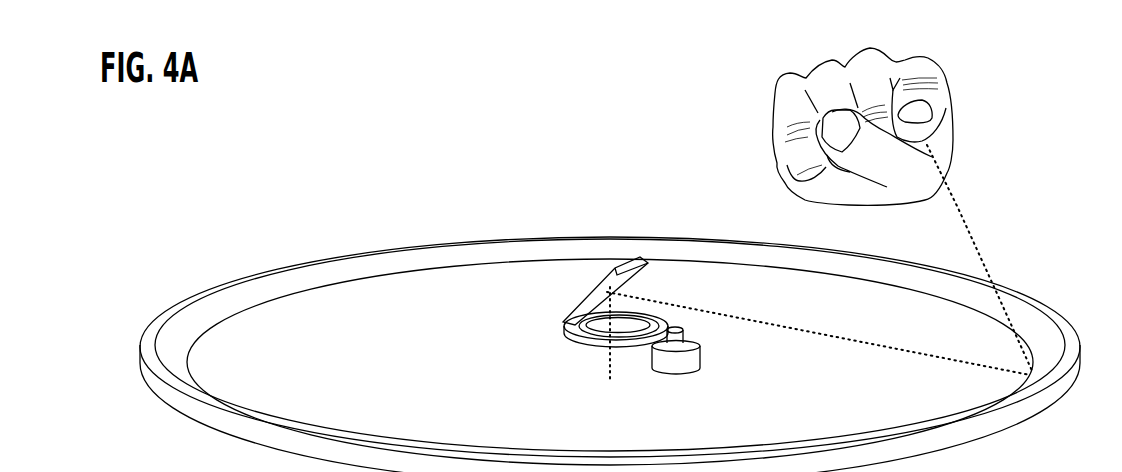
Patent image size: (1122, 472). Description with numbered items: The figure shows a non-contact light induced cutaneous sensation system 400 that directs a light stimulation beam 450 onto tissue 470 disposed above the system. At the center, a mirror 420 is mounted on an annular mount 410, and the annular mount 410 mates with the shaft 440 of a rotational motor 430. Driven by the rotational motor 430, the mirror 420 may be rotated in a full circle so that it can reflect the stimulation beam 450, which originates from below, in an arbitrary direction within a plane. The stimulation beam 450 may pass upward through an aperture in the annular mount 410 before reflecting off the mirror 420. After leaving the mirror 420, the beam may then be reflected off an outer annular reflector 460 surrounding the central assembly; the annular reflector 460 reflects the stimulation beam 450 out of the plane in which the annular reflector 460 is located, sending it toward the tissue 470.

The non-contact light induced cutaneous sensation system 400 is at (404, 173).
The annular mount 410 is at (577, 338).
The mirror 420 is at (588, 296).
The rotational motor 430 is at (684, 375).
The shaft 440 is at (687, 333).
The stimulation beam 450 is at (821, 331).
The outer annular reflector 460 is at (335, 263).
The tissue 470 is at (961, 102).